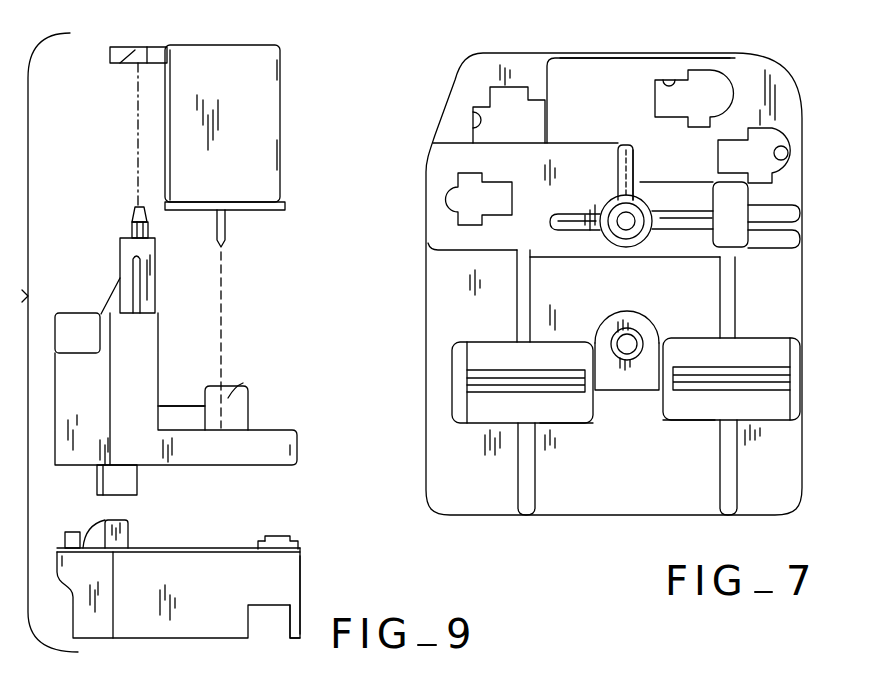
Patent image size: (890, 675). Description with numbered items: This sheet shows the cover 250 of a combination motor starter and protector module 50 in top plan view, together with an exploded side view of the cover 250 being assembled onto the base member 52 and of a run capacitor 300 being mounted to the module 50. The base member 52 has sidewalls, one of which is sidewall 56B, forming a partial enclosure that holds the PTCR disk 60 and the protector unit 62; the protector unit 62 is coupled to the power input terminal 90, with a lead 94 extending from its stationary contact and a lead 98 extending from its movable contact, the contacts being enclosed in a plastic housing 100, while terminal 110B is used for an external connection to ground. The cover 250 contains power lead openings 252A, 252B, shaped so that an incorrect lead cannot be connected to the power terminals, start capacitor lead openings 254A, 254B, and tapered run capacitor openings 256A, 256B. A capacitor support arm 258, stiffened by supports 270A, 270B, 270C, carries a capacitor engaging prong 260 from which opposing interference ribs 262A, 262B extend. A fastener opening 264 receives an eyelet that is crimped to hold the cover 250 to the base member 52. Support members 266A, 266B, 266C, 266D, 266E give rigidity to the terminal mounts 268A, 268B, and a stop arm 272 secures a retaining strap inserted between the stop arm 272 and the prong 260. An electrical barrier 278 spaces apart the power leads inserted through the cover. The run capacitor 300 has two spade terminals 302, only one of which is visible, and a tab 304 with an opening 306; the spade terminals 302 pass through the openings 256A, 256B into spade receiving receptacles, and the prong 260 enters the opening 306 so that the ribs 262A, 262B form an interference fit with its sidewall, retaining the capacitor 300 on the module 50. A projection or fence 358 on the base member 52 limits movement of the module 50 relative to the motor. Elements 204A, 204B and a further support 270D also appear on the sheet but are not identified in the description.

In FIG. 9, the combination motor starter and protector module 50 is at (195, 640).
In FIG. 9, the base member 52 is at (290, 578).
In FIG. 9, the sidewall 56B is at (386, 18).
In FIG. 9, the PTCR disk 60 is at (128, 537).
In FIG. 9, the protector unit 62 is at (287, 538).
In FIG. 9, the power input terminal 90 is at (130, 522).
In FIG. 9, the lead 94 is at (258, 546).
In FIG. 9, the lead 98 is at (191, 5).
In FIG. 9, the plastic housing 100 is at (320, 8).
In FIG. 9, the terminal 110B is at (77, 532).
In FIG. 9, the guide 204A is at (467, 6).
In FIG. 9, the guide 204B is at (253, 6).
In FIG. 9, the cover 250 is at (160, 350).
In FIG. 7, the cover 250 is at (786, 65).
In FIG. 7, the power lead opening 252A is at (446, 192).
In FIG. 7, the power lead opening 252B is at (472, 109).
In FIG. 7, the start capacitor lead opening 254A is at (788, 161).
In FIG. 7, the start capacitor lead opening 254B is at (661, 80).
In FIG. 7, the tapered run capacitor opening 256A is at (767, 378).
In FIG. 9, the tapered run capacitor opening 256B is at (230, 396).
In FIG. 7, the tapered run capacitor opening 256B is at (473, 385).
In FIG. 9, the capacitor support arm 258 is at (156, 286).
In FIG. 7, the capacitor support arm 258 is at (599, 229).
In FIG. 9, the capacitor engaging prong 260 is at (132, 220).
In FIG. 7, the capacitor engaging prong 260 is at (627, 231).
In FIG. 7, the interference rib 262A is at (652, 203).
In FIG. 9, the interference rib 262B is at (132, 226).
In FIG. 7, the interference rib 262B is at (606, 200).
In FIG. 7, the fastener opening 264 is at (633, 336).
In FIG. 7, the support member 266A is at (768, 481).
In FIG. 7, the support member 266B is at (737, 297).
In FIG. 9, the support member 266C is at (184, 407).
In FIG. 7, the support member 266C is at (516, 314).
In FIG. 7, the support member 266D is at (527, 492).
In FIG. 7, the support member 266E is at (631, 394).
In FIG. 7, the terminal mount 268A is at (693, 423).
In FIG. 9, the terminal mount 268B is at (246, 411).
In FIG. 7, the terminal mount 268B is at (566, 426).
In FIG. 9, the support 270A is at (132, 268).
In FIG. 7, the support 270A is at (556, 222).
In FIG. 9, the support 270B is at (108, 302).
In FIG. 7, the support 270B is at (622, 145).
In FIG. 7, the support 270C is at (679, 222).
In FIG. 7, the flat 270D is at (783, 208).
In FIG. 7, the stop arm 272 is at (741, 238).
In FIG. 9, the electrical barrier 278 is at (130, 480).
In FIG. 9, the run capacitor 300 is at (273, 105).
In FIG. 9, the spade terminal 302 is at (227, 228).
In FIG. 9, the tab 304 is at (110, 53).
In FIG. 9, the opening 306 is at (137, 46).
In FIG. 9, the projection or fence 358 is at (291, 620).